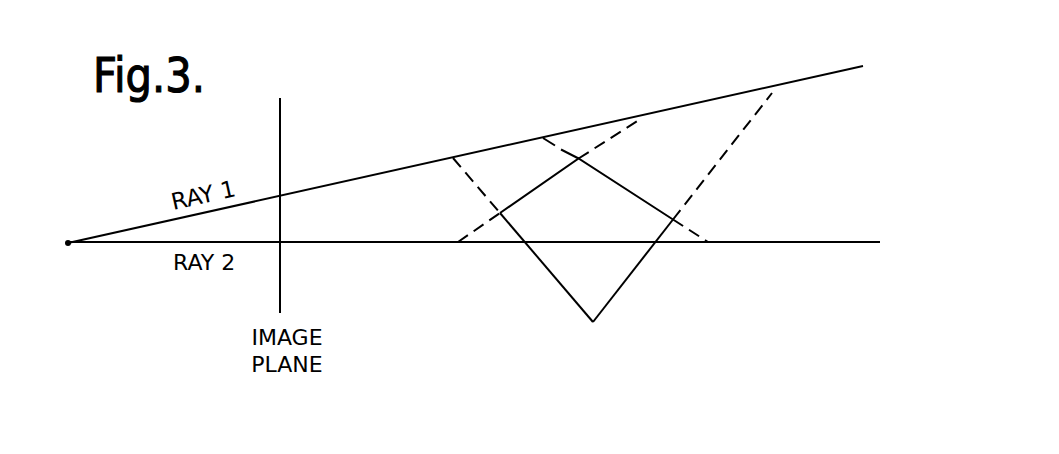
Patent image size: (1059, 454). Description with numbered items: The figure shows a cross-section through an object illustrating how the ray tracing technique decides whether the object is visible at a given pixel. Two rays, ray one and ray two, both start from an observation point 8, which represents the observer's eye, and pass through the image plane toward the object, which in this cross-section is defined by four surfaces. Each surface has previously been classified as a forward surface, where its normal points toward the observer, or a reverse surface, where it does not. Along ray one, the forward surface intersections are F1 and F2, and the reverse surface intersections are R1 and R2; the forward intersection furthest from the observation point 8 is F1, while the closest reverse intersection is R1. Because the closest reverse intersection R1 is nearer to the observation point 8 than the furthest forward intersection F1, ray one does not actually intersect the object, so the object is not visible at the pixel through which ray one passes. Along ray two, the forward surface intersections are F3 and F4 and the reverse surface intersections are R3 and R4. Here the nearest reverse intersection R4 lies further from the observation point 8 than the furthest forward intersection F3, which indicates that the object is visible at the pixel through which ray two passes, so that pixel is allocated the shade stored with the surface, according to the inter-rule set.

The observation point 8 is at (66, 247).
The forward surface intersection F1 is at (618, 117).
The forward surface intersection F2 is at (464, 169).
The forward surface intersection F3 is at (546, 267).
The forward surface intersection F4 is at (472, 247).
The reverse surface intersection R1 is at (549, 130).
The reverse surface intersection R2 is at (729, 133).
The reverse surface intersection R3 is at (705, 251).
The reverse surface intersection R4 is at (638, 271).